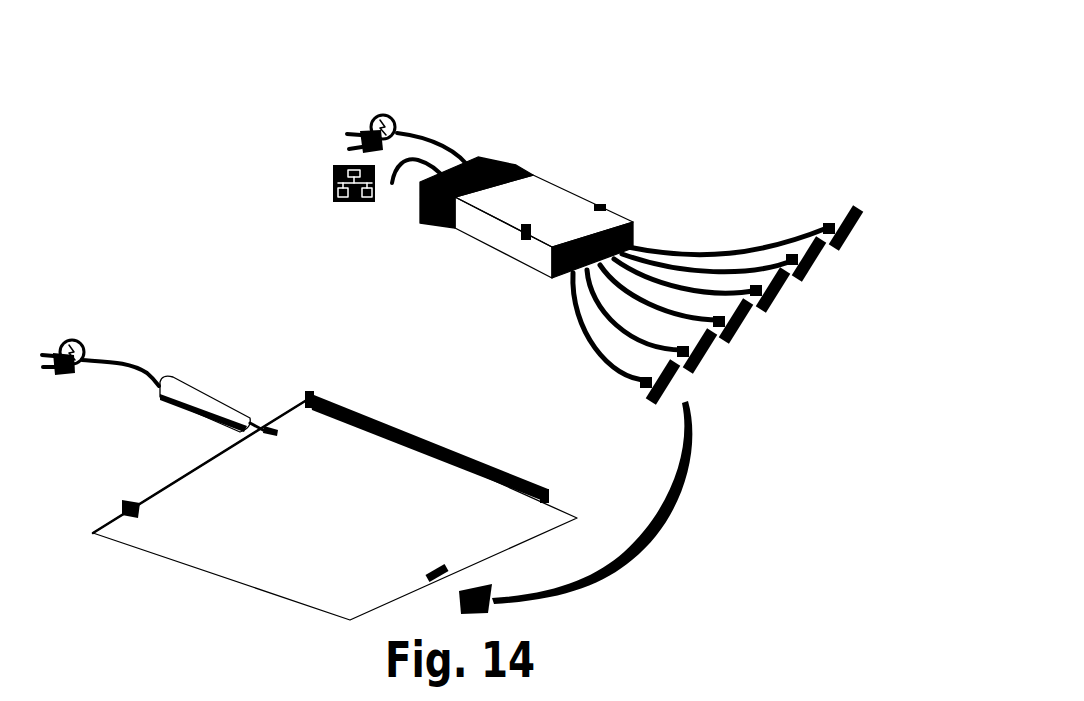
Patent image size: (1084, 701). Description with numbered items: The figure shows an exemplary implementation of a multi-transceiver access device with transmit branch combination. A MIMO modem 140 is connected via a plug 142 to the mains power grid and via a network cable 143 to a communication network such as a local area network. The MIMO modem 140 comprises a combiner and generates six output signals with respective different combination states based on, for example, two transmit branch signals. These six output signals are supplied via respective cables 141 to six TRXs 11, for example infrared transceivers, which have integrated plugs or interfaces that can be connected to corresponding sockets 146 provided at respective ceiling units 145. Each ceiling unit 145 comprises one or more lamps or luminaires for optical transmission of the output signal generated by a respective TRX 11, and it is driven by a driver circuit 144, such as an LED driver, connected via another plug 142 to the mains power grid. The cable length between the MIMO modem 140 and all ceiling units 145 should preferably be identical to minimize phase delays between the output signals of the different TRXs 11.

The TRX 11 is at (853, 208).
The MIMO modem 140 is at (538, 183).
The cables 141 is at (682, 250).
The plug 142 is at (380, 117).
The network cable 143 is at (393, 184).
The driver circuit 144 is at (208, 392).
The ceiling unit 145 is at (385, 457).
The socket 146 is at (447, 572).